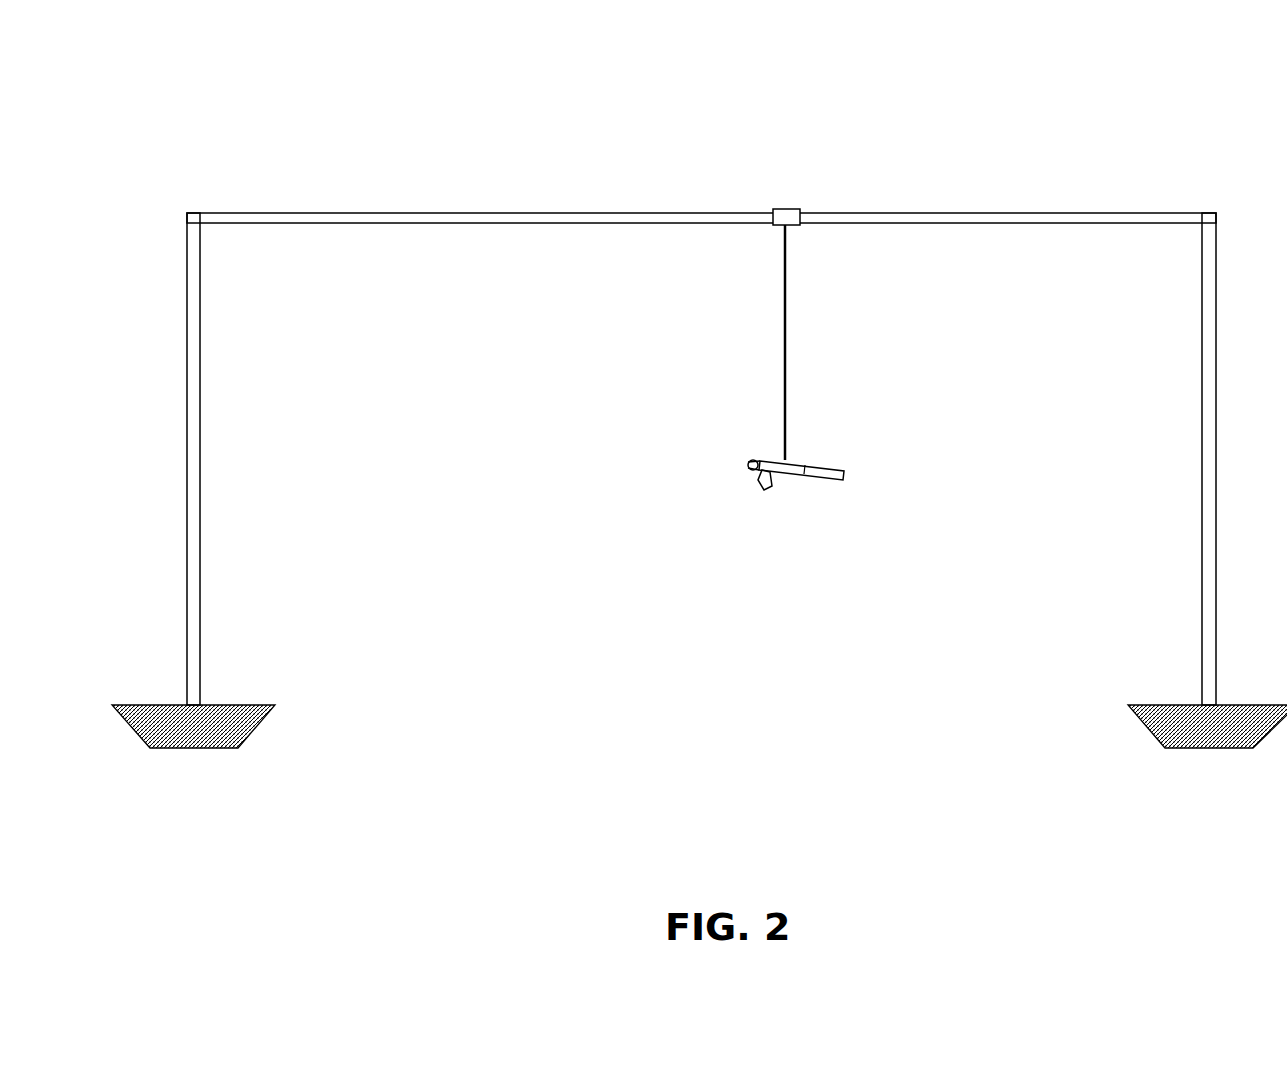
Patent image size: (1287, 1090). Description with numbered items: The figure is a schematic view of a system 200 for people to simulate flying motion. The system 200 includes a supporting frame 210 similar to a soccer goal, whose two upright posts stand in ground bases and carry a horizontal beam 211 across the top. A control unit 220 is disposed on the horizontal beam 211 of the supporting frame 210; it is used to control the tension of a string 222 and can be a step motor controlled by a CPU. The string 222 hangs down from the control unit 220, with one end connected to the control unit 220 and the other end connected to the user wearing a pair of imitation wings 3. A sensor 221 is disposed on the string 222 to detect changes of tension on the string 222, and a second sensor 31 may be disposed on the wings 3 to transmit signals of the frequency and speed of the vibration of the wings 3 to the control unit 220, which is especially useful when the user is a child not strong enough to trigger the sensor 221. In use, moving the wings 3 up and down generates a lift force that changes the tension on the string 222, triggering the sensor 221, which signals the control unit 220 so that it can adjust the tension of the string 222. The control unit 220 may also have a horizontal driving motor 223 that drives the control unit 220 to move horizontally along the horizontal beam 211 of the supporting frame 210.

The system for people to simulate flying motion 200 is at (1018, 118).
The supporting frame 210 is at (193, 242).
The horizontal beam 211 is at (1063, 213).
The control unit 220 is at (773, 211).
The horizontal driving motor 223 is at (800, 211).
The string 222 is at (787, 340).
The sensor 221 is at (782, 447).
The imitation wings 3 is at (760, 483).
The second sensor 31 is at (772, 470).